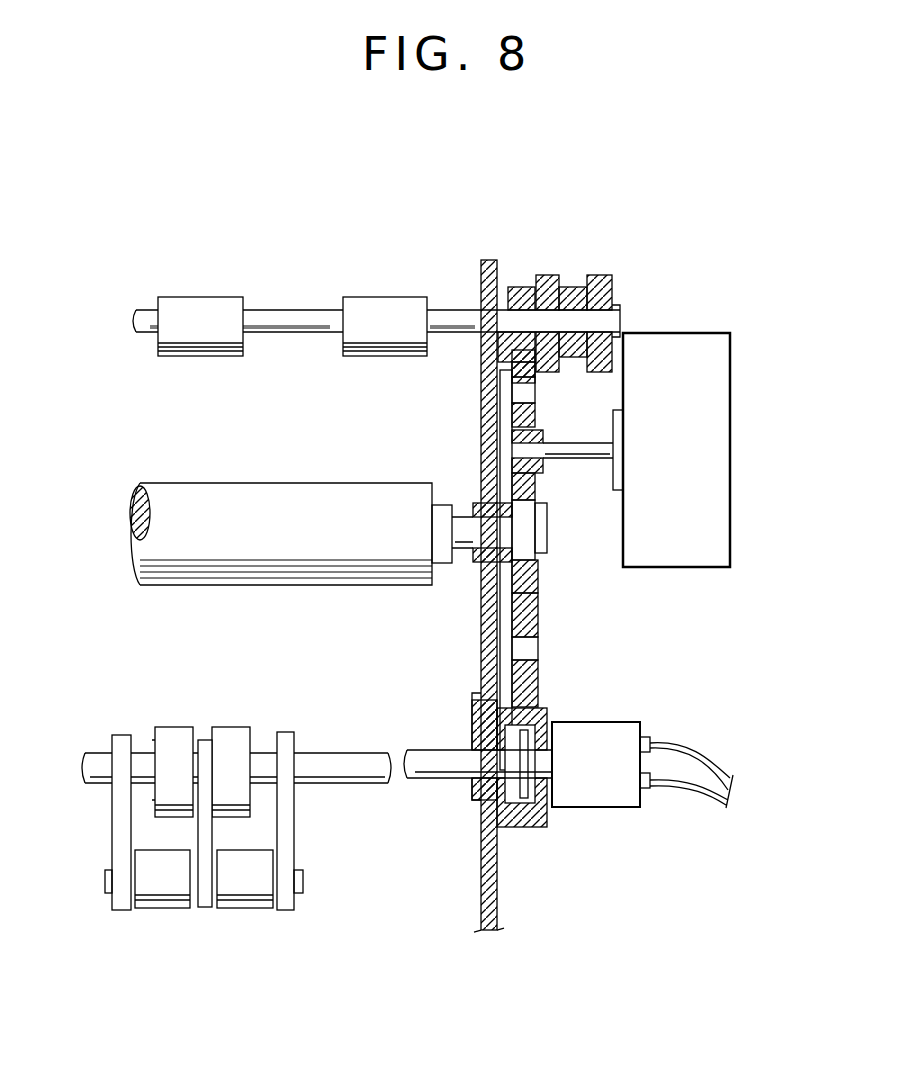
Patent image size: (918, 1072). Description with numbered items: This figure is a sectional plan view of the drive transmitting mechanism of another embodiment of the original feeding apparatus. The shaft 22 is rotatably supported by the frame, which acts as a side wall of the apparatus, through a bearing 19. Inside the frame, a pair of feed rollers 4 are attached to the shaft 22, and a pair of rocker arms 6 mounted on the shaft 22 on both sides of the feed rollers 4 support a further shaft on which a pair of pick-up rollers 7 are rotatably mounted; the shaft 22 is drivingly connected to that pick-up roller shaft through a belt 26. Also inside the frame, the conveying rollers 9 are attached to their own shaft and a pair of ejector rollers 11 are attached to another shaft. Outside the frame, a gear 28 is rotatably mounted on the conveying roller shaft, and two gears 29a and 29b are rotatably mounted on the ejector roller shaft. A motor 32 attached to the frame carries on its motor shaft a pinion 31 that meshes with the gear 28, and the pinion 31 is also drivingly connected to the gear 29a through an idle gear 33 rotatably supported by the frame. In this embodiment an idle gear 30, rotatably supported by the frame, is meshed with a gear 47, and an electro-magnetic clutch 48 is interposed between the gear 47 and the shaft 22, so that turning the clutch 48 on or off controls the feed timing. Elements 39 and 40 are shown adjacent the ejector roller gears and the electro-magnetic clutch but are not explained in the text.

The feed rollers 4 is at (235, 727).
The rocker arms 6 is at (287, 732).
The pick-up rollers 7 is at (258, 908).
The conveying rollers 9 is at (325, 483).
The ejector rollers 11 is at (197, 297).
The bearing 19 is at (472, 748).
The shaft 22 is at (416, 778).
The belt 26 is at (205, 907).
The gear 28 is at (538, 583).
The gear 29a is at (520, 287).
The gear 29b is at (580, 285).
The idle gear 30 is at (538, 626).
The pinion 31 is at (541, 462).
The motor 32 is at (718, 424).
The idle gear 33 is at (536, 416).
The gear 39 is at (535, 520).
The flange 40 is at (549, 290).
The gear 47 is at (547, 708).
The electro-magnetic clutch 48 is at (597, 807).